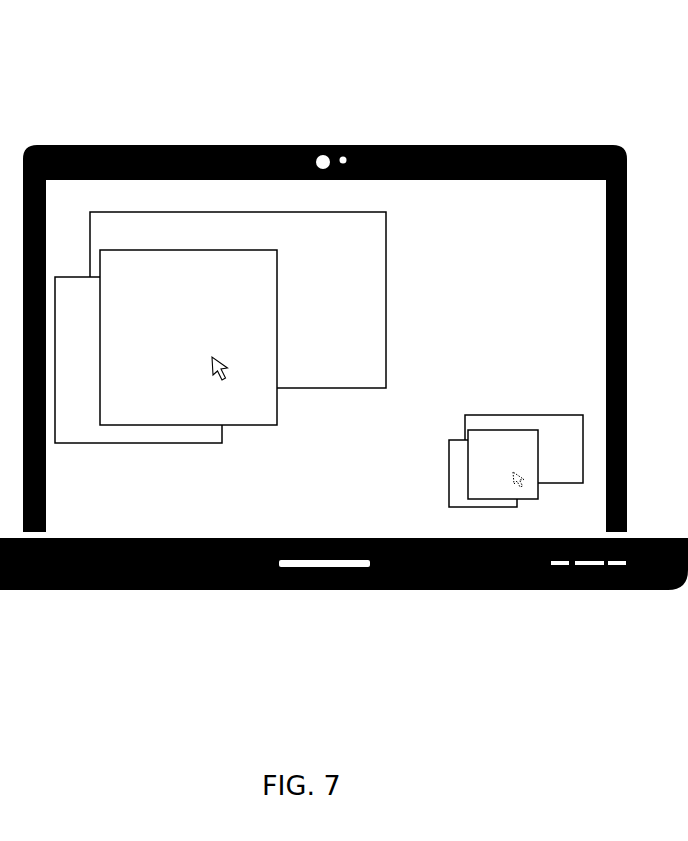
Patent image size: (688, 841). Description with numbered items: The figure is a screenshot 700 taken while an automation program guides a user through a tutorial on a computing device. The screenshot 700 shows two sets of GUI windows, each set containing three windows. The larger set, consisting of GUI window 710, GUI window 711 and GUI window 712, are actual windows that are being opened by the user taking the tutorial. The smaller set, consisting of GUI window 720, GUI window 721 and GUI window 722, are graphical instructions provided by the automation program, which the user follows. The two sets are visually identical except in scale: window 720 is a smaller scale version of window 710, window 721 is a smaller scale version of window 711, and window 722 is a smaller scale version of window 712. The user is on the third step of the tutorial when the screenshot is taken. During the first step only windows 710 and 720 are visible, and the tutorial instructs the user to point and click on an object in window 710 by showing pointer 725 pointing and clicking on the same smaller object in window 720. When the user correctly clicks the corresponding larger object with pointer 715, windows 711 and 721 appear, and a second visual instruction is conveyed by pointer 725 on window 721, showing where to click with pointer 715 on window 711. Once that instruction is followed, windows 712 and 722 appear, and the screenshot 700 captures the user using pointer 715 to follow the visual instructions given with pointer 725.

The screenshot 700 is at (148, 88).
The GUI window 710 is at (353, 252).
The GUI window 711 is at (93, 308).
The GUI window 712 is at (244, 280).
The pointer 715 is at (229, 372).
The GUI window 720 is at (576, 440).
The GUI window 721 is at (448, 467).
The GUI window 722 is at (534, 452).
The pointer 725 is at (524, 483).